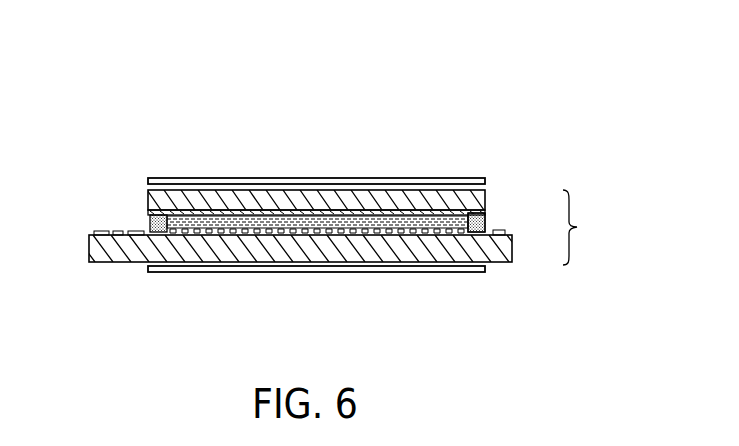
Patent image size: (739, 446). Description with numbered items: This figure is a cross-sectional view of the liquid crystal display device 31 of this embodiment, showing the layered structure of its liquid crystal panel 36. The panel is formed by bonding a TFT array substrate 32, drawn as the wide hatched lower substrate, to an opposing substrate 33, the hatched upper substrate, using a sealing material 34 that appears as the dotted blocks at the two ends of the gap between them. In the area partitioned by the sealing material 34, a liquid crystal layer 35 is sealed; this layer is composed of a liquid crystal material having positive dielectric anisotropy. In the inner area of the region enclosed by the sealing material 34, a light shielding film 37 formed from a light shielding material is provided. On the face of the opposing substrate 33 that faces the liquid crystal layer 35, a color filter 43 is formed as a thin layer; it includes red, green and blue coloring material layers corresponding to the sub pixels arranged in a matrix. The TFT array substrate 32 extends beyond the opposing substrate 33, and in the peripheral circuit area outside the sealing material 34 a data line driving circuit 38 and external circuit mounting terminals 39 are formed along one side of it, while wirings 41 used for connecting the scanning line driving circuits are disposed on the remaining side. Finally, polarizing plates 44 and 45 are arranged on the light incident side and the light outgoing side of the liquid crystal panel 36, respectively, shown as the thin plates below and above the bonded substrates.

The liquid crystal display device 31 is at (385, 139).
The TFT array substrate 32 is at (402, 252).
The opposing substrate 33 is at (336, 200).
The sealing material 34 is at (486, 218).
The liquid crystal layer 35 is at (318, 233).
The liquid crystal panel 36 is at (585, 227).
The light shielding film 37 is at (466, 213).
The data line driving circuit 38 is at (137, 231).
The external circuit mounting terminals 39 is at (102, 231).
The wirings 41 is at (510, 258).
The color filter 43 is at (281, 211).
The polarizing plate 44 is at (228, 271).
The polarizing plate 45 is at (226, 179).